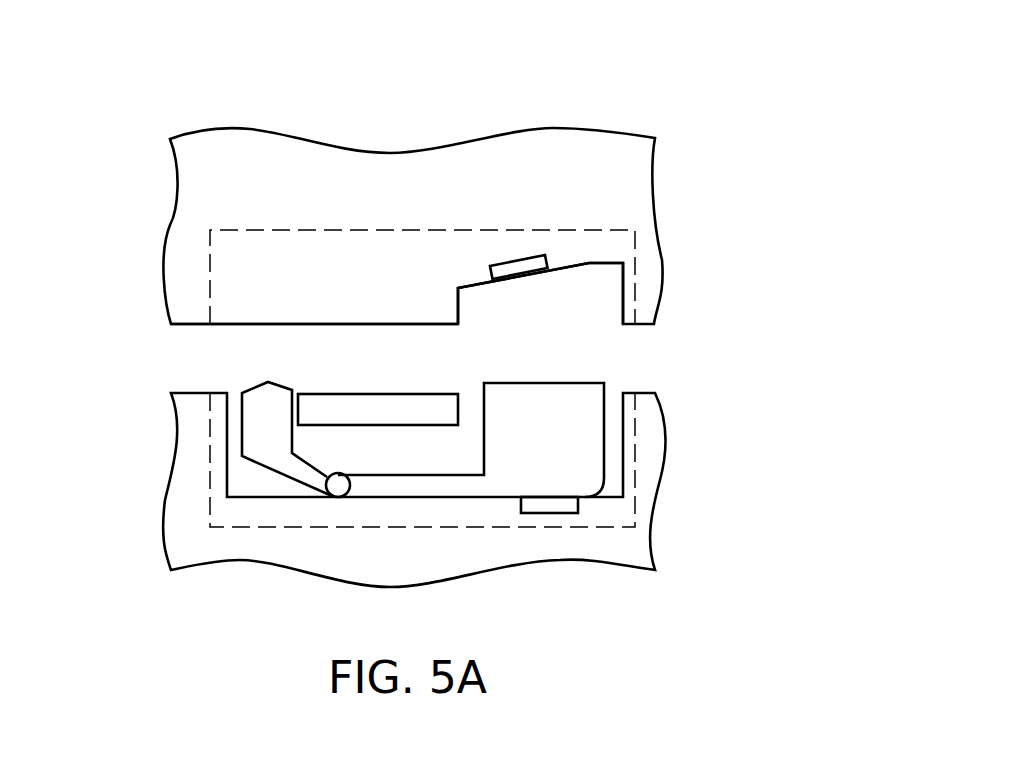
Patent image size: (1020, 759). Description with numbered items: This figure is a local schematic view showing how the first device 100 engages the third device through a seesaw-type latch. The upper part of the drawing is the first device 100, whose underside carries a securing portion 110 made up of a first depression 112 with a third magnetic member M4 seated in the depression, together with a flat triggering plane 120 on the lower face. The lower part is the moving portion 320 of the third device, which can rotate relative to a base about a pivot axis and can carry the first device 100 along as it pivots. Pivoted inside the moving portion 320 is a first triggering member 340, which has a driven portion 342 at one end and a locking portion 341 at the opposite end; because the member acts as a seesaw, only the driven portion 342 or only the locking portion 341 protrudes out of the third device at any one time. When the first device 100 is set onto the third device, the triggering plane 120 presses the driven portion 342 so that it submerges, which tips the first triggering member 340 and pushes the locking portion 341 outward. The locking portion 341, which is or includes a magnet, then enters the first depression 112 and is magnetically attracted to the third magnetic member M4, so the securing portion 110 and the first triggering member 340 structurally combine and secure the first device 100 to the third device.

The first device 100 is at (208, 183).
The securing portion 110 is at (562, 27).
The first depression 112 is at (586, 293).
The third magnetic member M4 is at (527, 265).
The triggering plane 120 is at (248, 323).
The moving portion 320 is at (190, 533).
The first triggering member 340 is at (727, 27).
The locking portion 341 is at (543, 408).
The driven portion 342 is at (273, 407).